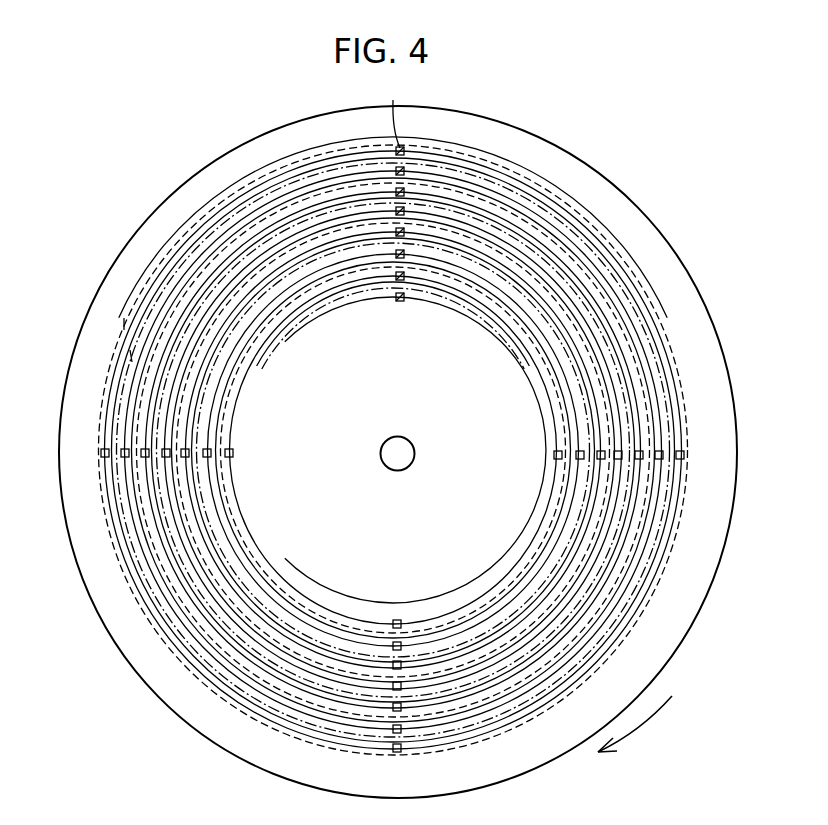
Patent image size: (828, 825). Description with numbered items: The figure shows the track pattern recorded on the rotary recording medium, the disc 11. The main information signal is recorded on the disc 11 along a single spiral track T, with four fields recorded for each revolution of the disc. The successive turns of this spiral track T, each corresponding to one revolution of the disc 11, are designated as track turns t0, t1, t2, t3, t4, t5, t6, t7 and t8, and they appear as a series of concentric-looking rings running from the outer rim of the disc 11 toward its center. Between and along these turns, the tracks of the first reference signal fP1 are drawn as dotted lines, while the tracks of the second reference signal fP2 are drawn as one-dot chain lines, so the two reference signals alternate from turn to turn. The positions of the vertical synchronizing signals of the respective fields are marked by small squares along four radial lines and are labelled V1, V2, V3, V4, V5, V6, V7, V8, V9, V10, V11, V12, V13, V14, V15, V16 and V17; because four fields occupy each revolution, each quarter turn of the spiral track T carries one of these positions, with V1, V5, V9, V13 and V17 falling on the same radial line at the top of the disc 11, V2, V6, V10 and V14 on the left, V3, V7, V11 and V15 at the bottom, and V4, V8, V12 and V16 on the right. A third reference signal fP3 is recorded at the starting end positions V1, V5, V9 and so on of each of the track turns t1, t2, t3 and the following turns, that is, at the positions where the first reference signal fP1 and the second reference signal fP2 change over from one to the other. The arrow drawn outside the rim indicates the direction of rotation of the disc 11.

The disc 11 is at (700, 305).
The spiral track T is at (206, 222).
The track turn t0 is at (494, 172).
The track turn t1 is at (303, 176).
The track turn t2 is at (357, 176).
The track turn t3 is at (276, 216).
The track turn t4 is at (210, 276).
The track turn t5 is at (287, 310).
The track turn t6 is at (262, 330).
The track turn t7 is at (246, 364).
The track turn t8 is at (342, 310).
The first reference signal fP1 is at (124, 324).
The second reference signal fP2 is at (131, 356).
The third reference signal fP3 is at (394, 113).
The vertical synchronizing signal position V1 is at (404, 148).
The vertical synchronizing signal position V2 is at (101, 453).
The vertical synchronizing signal position V3 is at (397, 752).
The vertical synchronizing signal position V4 is at (684, 455).
The vertical synchronizing signal position V5 is at (404, 171).
The vertical synchronizing signal position V6 is at (121, 457).
The vertical synchronizing signal position V7 is at (393, 708).
The vertical synchronizing signal position V8 is at (663, 459).
The vertical synchronizing signal position V9 is at (404, 192).
The vertical synchronizing signal position V10 is at (141, 450).
The vertical synchronizing signal position V11 is at (393, 687).
The vertical synchronizing signal position V12 is at (643, 451).
The vertical synchronizing signal position V13 is at (404, 211).
The vertical synchronizing signal position V14 is at (162, 457).
The vertical synchronizing signal position V15 is at (393, 666).
The vertical synchronizing signal position V16 is at (614, 451).
The vertical synchronizing signal position V17 is at (404, 232).